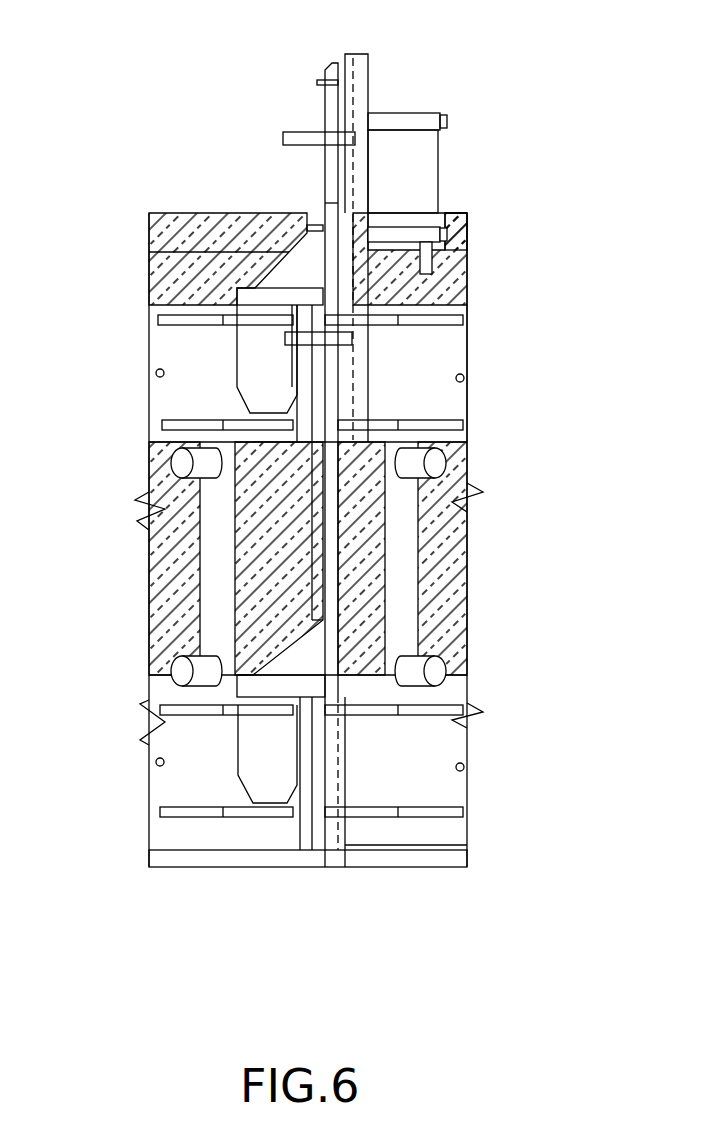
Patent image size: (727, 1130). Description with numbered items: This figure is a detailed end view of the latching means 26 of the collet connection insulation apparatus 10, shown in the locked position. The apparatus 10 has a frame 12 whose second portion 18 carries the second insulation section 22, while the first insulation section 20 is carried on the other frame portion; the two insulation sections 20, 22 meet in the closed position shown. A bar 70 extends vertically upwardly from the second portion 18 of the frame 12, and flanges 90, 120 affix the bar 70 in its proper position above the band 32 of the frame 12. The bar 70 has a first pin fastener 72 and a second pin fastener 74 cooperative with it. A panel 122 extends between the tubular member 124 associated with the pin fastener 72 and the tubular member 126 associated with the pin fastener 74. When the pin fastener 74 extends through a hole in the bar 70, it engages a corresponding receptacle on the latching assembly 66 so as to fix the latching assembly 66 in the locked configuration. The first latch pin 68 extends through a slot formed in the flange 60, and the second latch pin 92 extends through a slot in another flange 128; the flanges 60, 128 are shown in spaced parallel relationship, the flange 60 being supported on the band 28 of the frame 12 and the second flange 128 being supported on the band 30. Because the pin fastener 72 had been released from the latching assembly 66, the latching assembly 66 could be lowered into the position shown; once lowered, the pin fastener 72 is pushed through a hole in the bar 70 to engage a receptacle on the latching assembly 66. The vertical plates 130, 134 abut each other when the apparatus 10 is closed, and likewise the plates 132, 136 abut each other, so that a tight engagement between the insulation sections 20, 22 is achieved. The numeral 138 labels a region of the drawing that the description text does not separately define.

The collet connection insulation apparatus 10 is at (520, 262).
The frame 12 is at (170, 776).
The second portion 18 is at (457, 358).
The first insulation section 20 is at (190, 230).
The second insulation section 22 is at (465, 583).
The latching means 26 is at (437, 76).
The band 28 is at (172, 382).
The band 30 is at (170, 803).
The band 32 is at (457, 390).
The flange 60 is at (178, 318).
The latching assembly 66 is at (302, 222).
The first latch pin 68 is at (255, 372).
The bar 70 is at (360, 52).
The first pin fastener 72 is at (436, 113).
The second pin fastener 74 is at (447, 225).
The flange 90 is at (415, 328).
The second latch pin 92 is at (255, 758).
The flange 120 is at (412, 425).
The panel 122 is at (432, 160).
The tubular member 124 is at (392, 113).
The tubular member 126 is at (380, 232).
The flange 128 is at (160, 713).
The vertical plate 130 is at (300, 403).
The plate 132 is at (300, 825).
The vertical plate 134 is at (316, 400).
The plate 136 is at (316, 772).
The lower right chamber 138 is at (458, 788).